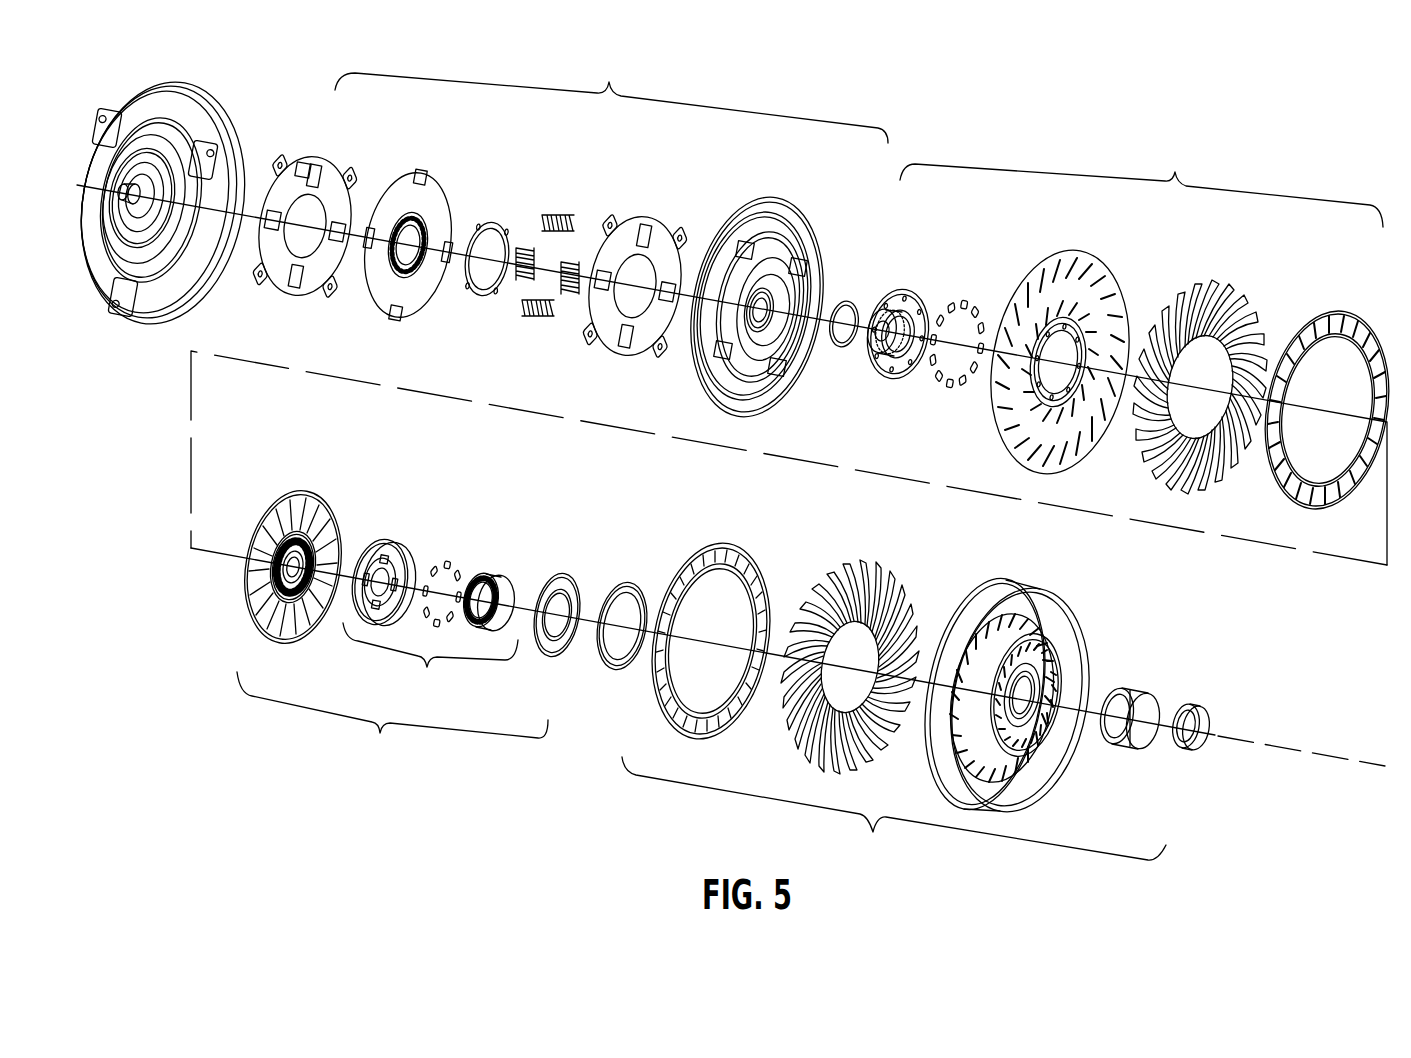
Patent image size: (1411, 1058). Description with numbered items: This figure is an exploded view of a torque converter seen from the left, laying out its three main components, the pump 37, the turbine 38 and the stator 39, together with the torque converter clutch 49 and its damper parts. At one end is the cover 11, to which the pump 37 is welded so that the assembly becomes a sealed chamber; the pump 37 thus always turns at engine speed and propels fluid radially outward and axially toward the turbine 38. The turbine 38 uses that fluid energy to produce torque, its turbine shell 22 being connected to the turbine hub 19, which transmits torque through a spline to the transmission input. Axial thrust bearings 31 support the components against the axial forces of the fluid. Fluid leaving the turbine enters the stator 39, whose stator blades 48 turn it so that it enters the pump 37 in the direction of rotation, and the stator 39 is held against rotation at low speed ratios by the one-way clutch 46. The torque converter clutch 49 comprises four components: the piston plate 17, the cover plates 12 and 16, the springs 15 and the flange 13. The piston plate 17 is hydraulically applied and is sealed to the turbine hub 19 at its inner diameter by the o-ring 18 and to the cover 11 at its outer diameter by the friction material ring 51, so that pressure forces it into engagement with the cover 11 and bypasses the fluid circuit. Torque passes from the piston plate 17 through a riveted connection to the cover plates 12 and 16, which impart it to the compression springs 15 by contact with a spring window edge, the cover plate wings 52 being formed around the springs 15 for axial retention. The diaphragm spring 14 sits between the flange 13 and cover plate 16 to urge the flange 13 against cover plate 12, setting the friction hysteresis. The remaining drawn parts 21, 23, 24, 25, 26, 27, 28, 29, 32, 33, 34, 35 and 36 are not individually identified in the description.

The cover 11 is at (252, 110).
The cover plate 12 is at (345, 152).
The flange 13 is at (445, 168).
The diaphragm spring 14 is at (507, 208).
The compression springs 15 is at (589, 203).
The cover plate 16 is at (675, 198).
The piston plate 17 is at (769, 276).
The o-ring 18 is at (870, 278).
The turbine hub 19 is at (930, 270).
The rollers 21 is at (985, 291).
The turbine shell 22 is at (1107, 253).
The turbine blades 23 is at (1241, 276).
The turbine ring 24 is at (1344, 298).
The stator 25 is at (335, 480).
The one-way clutch race 26 is at (407, 525).
The clutch rollers 27 is at (459, 546).
The bearing 28 is at (520, 555).
The thrust washer 29 is at (584, 556).
The axial thrust bearings 31 is at (650, 568).
The impeller ring 32 is at (772, 551).
The impeller blades 33 is at (925, 566).
The impeller shell 34 is at (1094, 601).
The impeller hub 35 is at (1152, 671).
The bushing 36 is at (1209, 693).
The pump 37 is at (894, 813).
The turbine 38 is at (1141, 180).
The stator 39 is at (392, 722).
The one-way clutch 46 is at (430, 663).
The stator blades 48 is at (302, 490).
The torque converter clutch 49 is at (611, 94).
The friction material ring 51 is at (760, 208).
The cover plate wings 52 is at (308, 174).